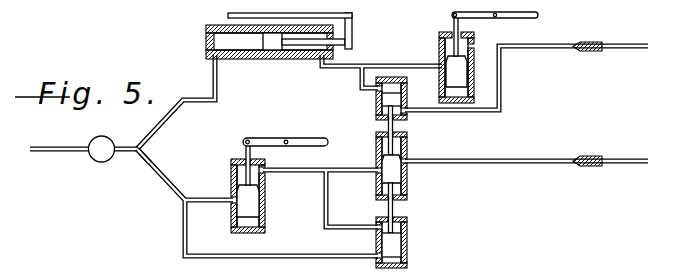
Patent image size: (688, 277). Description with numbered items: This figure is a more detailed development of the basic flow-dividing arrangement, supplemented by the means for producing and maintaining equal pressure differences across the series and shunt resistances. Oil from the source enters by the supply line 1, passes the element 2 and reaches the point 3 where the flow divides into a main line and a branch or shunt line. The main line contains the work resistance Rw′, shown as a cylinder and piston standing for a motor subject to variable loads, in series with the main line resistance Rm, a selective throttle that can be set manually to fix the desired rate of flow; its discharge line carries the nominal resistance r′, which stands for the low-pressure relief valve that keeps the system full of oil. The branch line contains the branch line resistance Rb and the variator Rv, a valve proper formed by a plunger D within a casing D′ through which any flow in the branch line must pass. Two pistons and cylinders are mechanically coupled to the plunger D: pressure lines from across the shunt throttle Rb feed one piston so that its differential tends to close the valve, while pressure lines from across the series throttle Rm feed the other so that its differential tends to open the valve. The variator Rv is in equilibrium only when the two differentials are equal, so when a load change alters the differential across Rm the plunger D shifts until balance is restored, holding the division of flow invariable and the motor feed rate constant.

The supply conduit 1 is at (52, 144).
The junction 2 is at (126, 144).
The branch conduit 3 is at (143, 148).
The work resistance Rw′ is at (279, 51).
The main line resistance Rm is at (434, 47).
The nominal discharge resistance r′ is at (588, 42).
The plunger D is at (406, 143).
The casing D′ is at (374, 149).
The variator Rv is at (410, 188).
The branch line resistance Rb is at (229, 177).